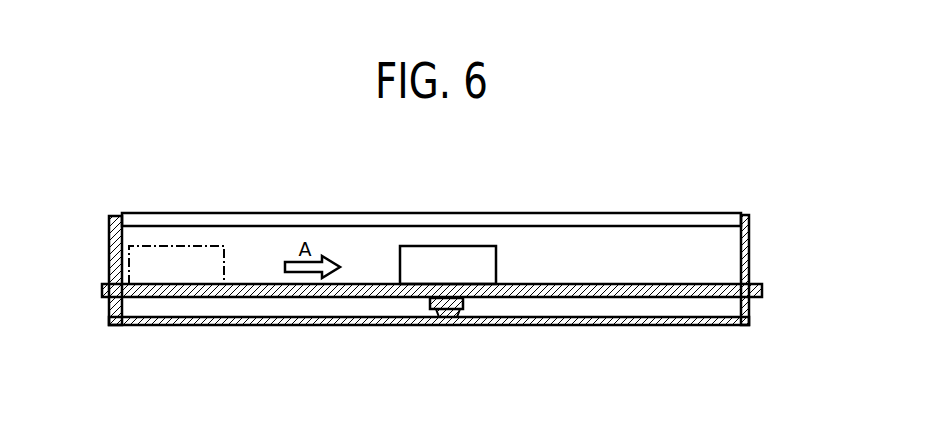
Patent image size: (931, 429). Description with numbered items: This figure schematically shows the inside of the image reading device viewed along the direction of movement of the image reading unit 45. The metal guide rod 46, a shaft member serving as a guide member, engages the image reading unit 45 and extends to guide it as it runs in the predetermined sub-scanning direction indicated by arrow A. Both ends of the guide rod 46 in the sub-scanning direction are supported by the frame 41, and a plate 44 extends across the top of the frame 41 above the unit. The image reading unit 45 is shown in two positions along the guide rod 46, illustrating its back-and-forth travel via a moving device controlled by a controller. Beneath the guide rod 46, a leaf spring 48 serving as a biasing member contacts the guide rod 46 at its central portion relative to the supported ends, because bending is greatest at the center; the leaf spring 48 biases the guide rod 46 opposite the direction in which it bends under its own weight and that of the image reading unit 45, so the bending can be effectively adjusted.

The frame 41 is at (621, 326).
The cover plate 44 is at (322, 213).
The image reading unit 45 is at (450, 246).
The guide rod 46 is at (620, 284).
The leaf spring 48 is at (427, 309).